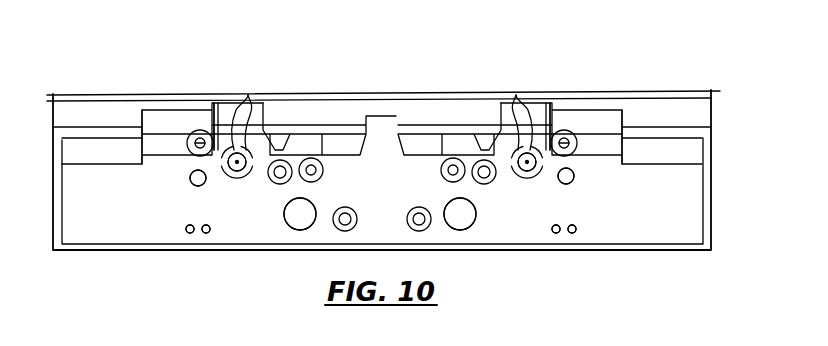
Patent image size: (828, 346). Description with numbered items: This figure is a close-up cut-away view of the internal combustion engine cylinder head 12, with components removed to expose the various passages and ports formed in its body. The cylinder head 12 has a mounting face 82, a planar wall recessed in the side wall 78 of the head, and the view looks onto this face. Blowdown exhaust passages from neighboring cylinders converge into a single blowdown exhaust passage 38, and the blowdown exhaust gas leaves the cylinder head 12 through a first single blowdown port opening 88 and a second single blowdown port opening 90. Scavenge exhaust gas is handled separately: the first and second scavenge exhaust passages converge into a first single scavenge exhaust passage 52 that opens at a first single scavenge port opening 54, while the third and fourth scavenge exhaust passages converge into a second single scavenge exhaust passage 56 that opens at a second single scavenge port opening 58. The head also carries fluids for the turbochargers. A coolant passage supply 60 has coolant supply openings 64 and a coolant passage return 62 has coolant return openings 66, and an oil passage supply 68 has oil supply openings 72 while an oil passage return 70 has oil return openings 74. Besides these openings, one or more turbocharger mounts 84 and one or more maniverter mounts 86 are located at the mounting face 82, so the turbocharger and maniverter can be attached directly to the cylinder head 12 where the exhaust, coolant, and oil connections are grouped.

The cylinder head 12 is at (657, 250).
The single blowdown exhaust passage 38 is at (188, 164).
The first single scavenge exhaust passage 52 is at (459, 222).
The first single scavenge port opening 54 is at (476, 213).
The second single scavenge exhaust passage 56 is at (303, 222).
The second single scavenge port opening 58 is at (284, 214).
The coolant passage supply 60 is at (247, 95).
The coolant passage return 62 is at (190, 177).
The coolant supply opening 64 is at (222, 152).
The coolant return opening 66 is at (196, 185).
The oil passage supply 68 is at (191, 233).
The oil passage return 70 is at (204, 225).
The oil supply opening 72 is at (188, 225).
The oil return opening 74 is at (210, 232).
The side wall 78 is at (692, 108).
The mounting face 82 is at (694, 202).
The turbocharger mount 84 is at (191, 139).
The maniverter mount 86 is at (414, 212).
The first single blowdown port opening 88 is at (527, 163).
The second single blowdown port opening 90 is at (237, 163).